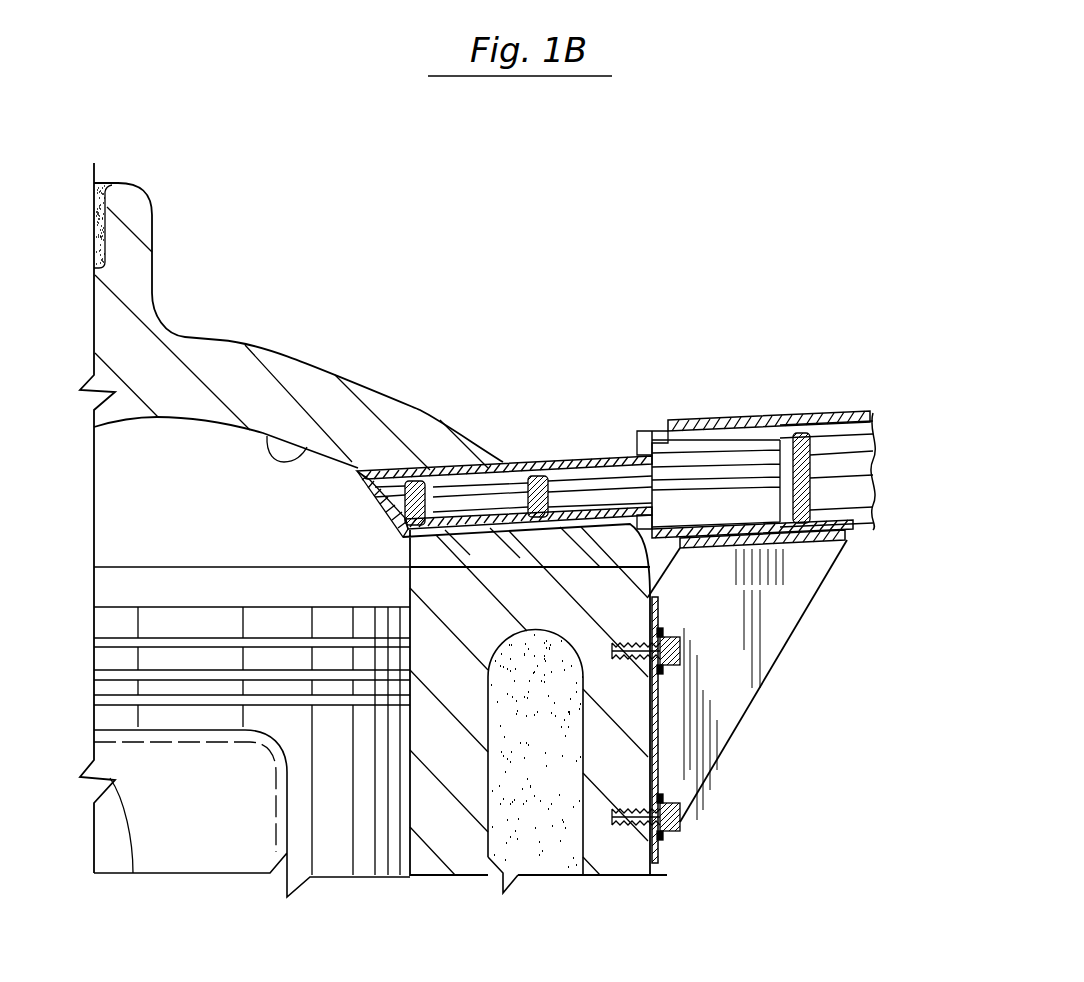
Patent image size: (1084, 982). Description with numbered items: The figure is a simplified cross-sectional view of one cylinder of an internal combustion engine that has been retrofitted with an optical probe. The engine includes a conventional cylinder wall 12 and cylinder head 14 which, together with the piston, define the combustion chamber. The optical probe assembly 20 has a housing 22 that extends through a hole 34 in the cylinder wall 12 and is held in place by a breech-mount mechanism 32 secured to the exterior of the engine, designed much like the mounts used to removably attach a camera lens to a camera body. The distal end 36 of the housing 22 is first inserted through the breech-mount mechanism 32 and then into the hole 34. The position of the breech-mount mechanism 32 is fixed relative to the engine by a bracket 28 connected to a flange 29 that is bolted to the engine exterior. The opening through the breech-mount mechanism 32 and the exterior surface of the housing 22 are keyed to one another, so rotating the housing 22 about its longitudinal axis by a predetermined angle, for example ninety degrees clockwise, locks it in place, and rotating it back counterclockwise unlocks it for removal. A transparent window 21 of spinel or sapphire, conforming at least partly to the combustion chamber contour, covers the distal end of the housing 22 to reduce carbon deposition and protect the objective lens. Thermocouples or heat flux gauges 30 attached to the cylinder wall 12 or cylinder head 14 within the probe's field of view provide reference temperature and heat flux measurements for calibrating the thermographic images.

The cylinder wall 12 is at (612, 857).
The cylinder head 14 is at (285, 462).
The optical probe assembly 20 is at (673, 277).
The transparent window 21 is at (372, 492).
The optical probe housing 22 is at (860, 413).
The bracket 28 is at (767, 640).
The flange 29 is at (660, 610).
The thermocouples or heat flux gauges 30 is at (687, 822).
The breech-mount mechanism 32 is at (770, 413).
The hole 34 is at (440, 466).
The distal end 36 is at (572, 455).